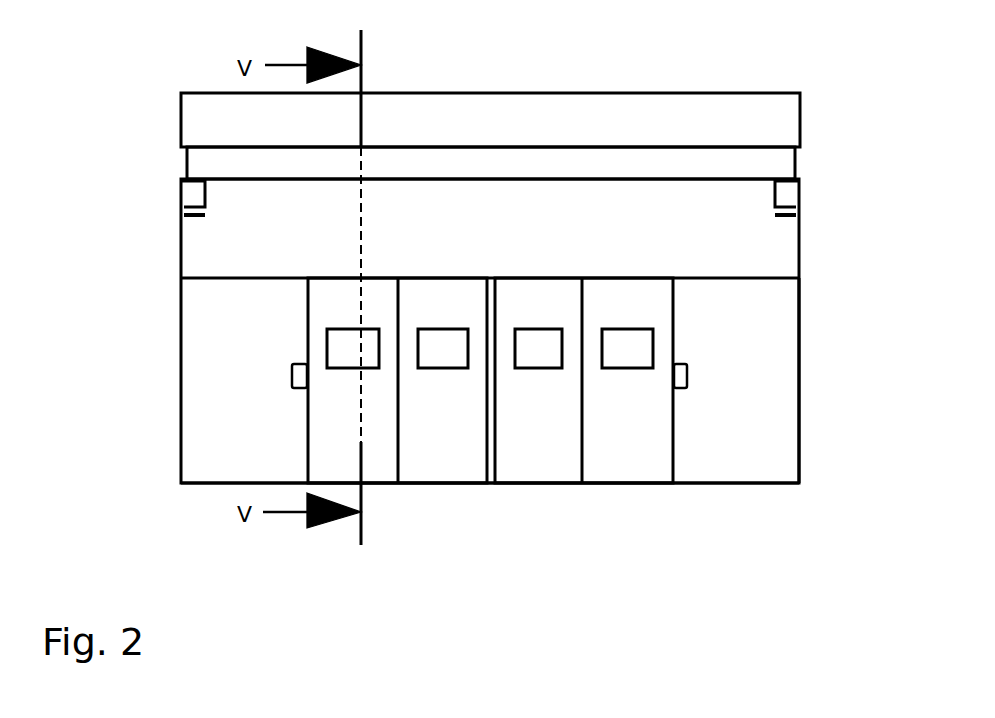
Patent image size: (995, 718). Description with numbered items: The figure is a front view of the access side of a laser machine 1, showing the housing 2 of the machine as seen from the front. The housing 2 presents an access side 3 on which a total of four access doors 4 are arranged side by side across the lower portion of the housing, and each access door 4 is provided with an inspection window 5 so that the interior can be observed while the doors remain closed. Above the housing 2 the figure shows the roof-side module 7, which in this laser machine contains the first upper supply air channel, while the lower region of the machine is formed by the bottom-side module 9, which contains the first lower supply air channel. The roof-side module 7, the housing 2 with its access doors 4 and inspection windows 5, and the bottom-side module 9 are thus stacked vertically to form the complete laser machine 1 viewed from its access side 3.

The laser machine 1 is at (160, 93).
The housing 2 is at (160, 264).
The access side 3 is at (498, 549).
The access door 4 is at (448, 451).
The inspection window 5 is at (449, 358).
The roof-side module 7 is at (812, 153).
The bottom-side module 9 is at (815, 453).